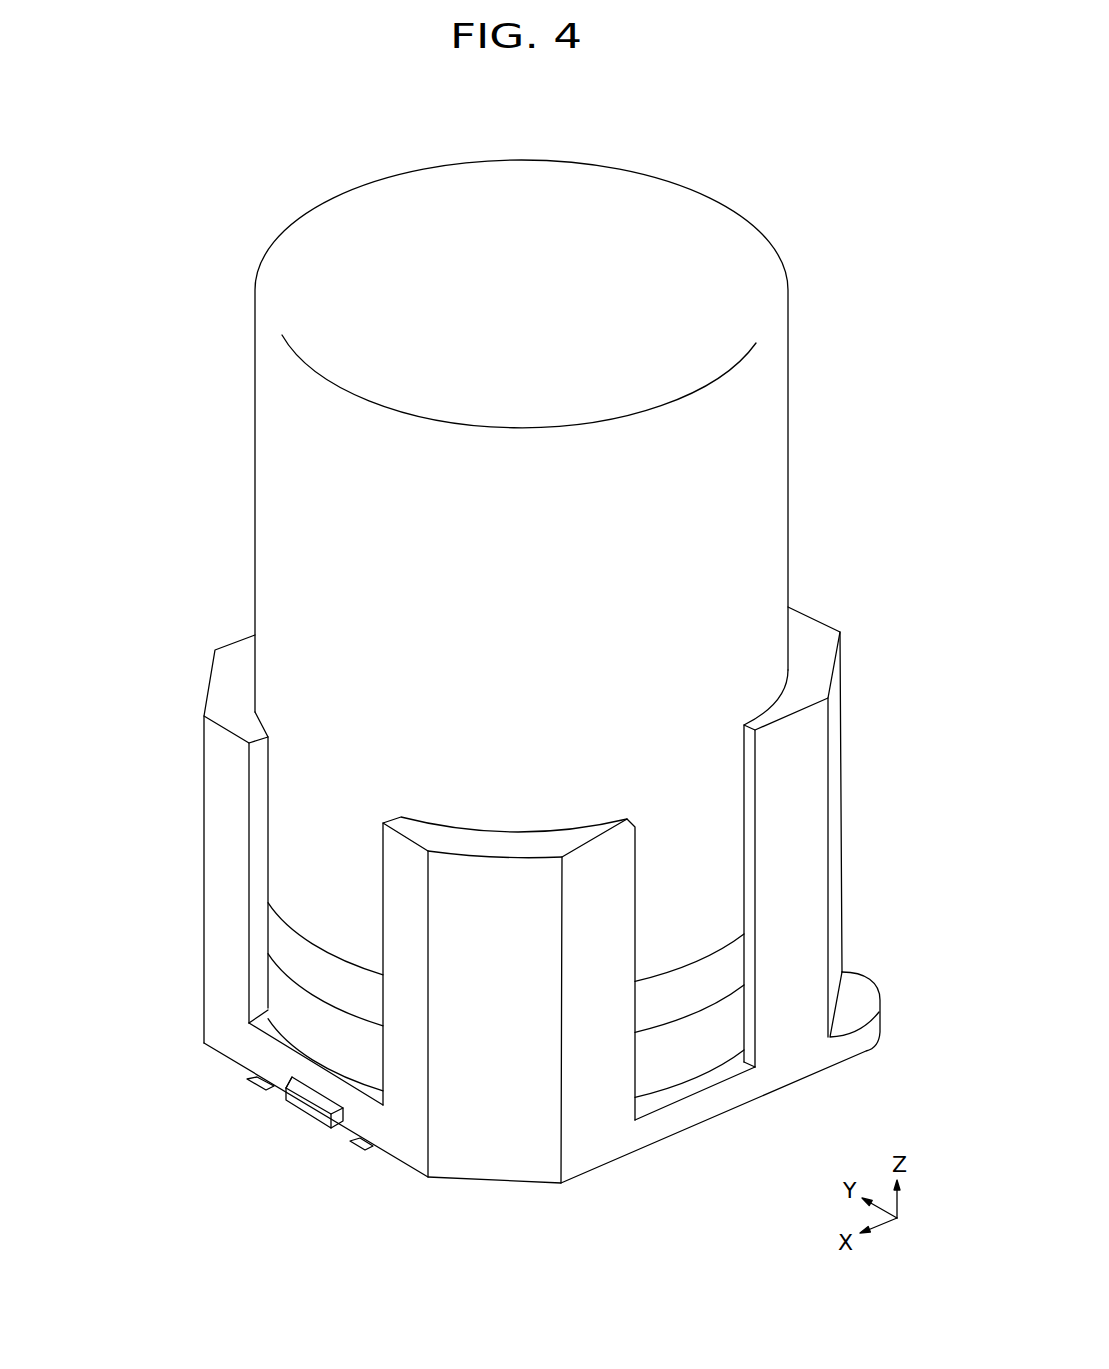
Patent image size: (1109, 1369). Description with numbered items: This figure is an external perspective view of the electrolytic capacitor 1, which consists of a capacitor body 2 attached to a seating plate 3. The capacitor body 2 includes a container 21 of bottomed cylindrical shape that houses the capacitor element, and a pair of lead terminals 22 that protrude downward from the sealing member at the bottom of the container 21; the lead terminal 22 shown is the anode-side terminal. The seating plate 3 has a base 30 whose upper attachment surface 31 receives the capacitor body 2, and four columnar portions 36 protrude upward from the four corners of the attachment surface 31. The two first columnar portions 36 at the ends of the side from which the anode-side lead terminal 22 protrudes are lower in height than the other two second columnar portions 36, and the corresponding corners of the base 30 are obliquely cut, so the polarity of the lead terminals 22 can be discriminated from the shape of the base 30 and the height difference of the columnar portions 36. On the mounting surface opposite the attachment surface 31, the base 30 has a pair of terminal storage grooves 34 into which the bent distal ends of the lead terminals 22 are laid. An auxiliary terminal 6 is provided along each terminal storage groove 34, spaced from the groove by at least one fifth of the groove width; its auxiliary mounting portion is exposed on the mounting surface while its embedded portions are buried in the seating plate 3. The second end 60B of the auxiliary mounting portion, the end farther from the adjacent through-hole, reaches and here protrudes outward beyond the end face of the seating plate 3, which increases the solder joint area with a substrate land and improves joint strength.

The electrolytic capacitor 1 is at (793, 532).
The capacitor body 2 is at (792, 374).
The container 21 is at (776, 443).
The lead terminal 22 is at (312, 1122).
The seating plate 3 is at (812, 1082).
The base 30 is at (855, 992).
The attachment surface 31 is at (660, 1097).
The terminal storage groove 34 is at (312, 1082).
The columnar portion 36 is at (238, 658).
The auxiliary terminal 6 is at (249, 1101).
The second end 60B is at (247, 1080).